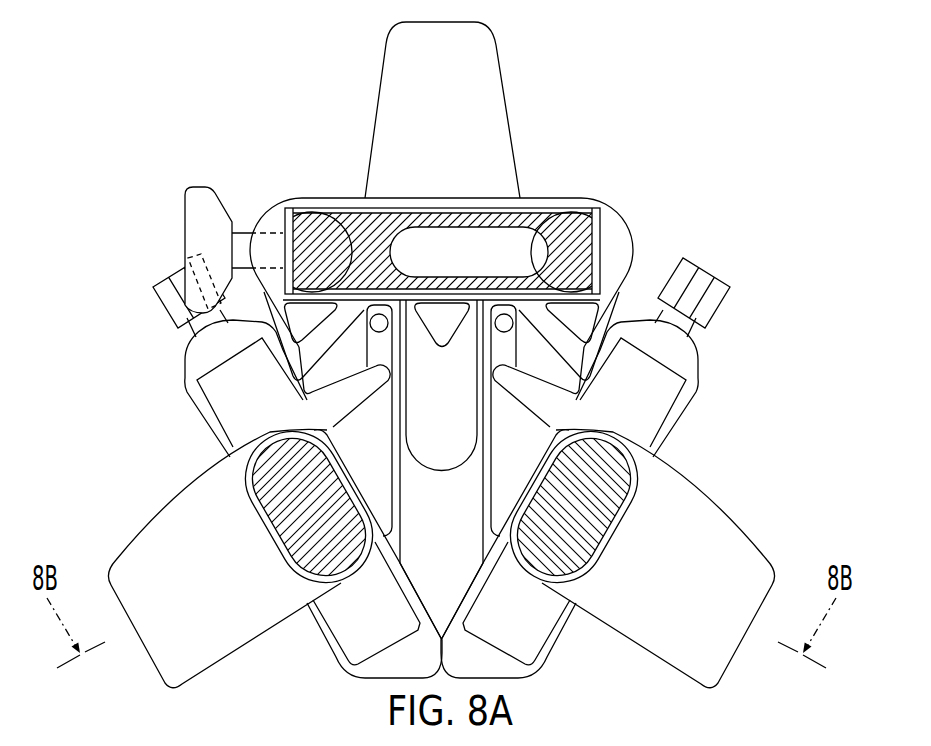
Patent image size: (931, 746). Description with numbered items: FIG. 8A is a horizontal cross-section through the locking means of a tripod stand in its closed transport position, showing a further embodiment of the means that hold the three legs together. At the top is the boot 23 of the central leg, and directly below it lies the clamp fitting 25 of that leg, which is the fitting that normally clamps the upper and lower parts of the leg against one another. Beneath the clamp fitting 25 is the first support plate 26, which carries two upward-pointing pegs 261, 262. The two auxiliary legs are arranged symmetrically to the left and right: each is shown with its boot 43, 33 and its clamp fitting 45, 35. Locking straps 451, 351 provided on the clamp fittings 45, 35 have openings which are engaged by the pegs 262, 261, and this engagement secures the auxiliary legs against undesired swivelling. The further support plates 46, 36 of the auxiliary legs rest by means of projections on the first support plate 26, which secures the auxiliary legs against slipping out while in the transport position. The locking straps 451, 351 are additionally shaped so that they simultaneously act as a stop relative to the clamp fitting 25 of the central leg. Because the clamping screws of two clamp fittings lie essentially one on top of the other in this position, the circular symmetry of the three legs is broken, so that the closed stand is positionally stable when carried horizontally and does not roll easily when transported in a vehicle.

The boot 23 is at (526, 94).
The clamp fitting 25 is at (618, 228).
The first support plate 26 is at (452, 403).
The peg 261 is at (505, 314).
The peg 262 is at (378, 314).
The boot 33 is at (716, 481).
The clamp fitting 35 is at (683, 355).
The further support plate 36 is at (541, 400).
The locking strap 351 is at (483, 512).
The boot 43 is at (172, 456).
The clamp fitting 45 is at (198, 357).
The further support plate 46 is at (342, 400).
The locking strap 451 is at (400, 485).